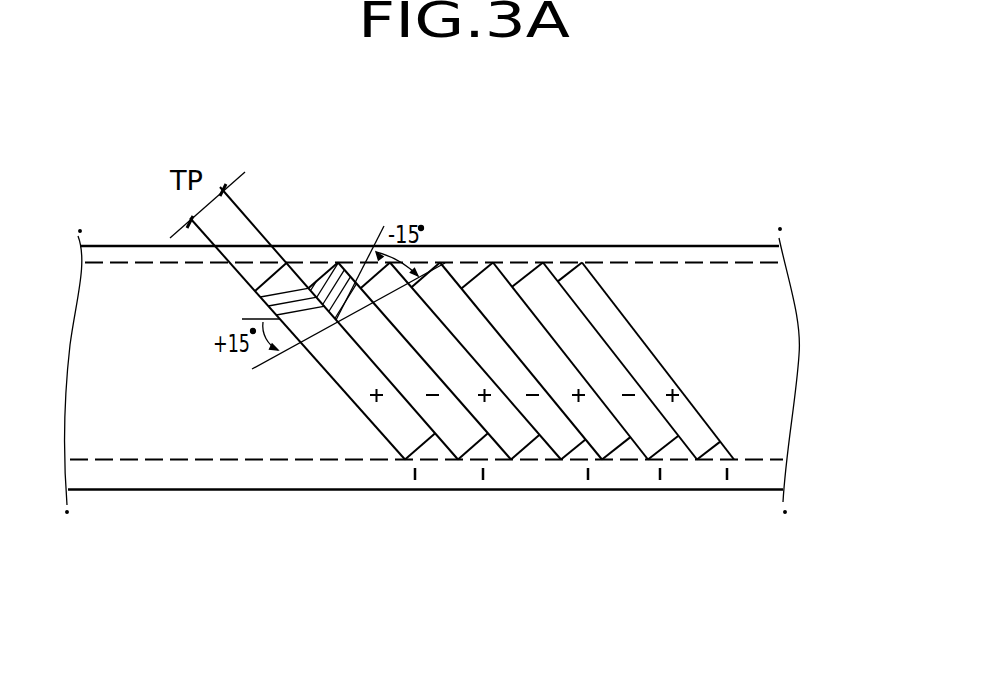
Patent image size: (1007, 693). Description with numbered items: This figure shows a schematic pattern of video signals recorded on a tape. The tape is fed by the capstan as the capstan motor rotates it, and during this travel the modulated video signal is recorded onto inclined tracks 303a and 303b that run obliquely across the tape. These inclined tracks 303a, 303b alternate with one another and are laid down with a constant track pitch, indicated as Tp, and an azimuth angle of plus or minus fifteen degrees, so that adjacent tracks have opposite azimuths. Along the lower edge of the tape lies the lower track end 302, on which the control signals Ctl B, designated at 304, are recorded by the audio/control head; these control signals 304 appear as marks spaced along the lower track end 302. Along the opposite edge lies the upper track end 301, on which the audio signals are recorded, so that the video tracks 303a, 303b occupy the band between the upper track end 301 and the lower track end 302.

The upper track end 301 is at (637, 257).
The lower track end 302 is at (742, 487).
The inclined track 303a is at (407, 447).
The inclined track 303b is at (460, 448).
The control signals Ctl B 304 is at (485, 476).